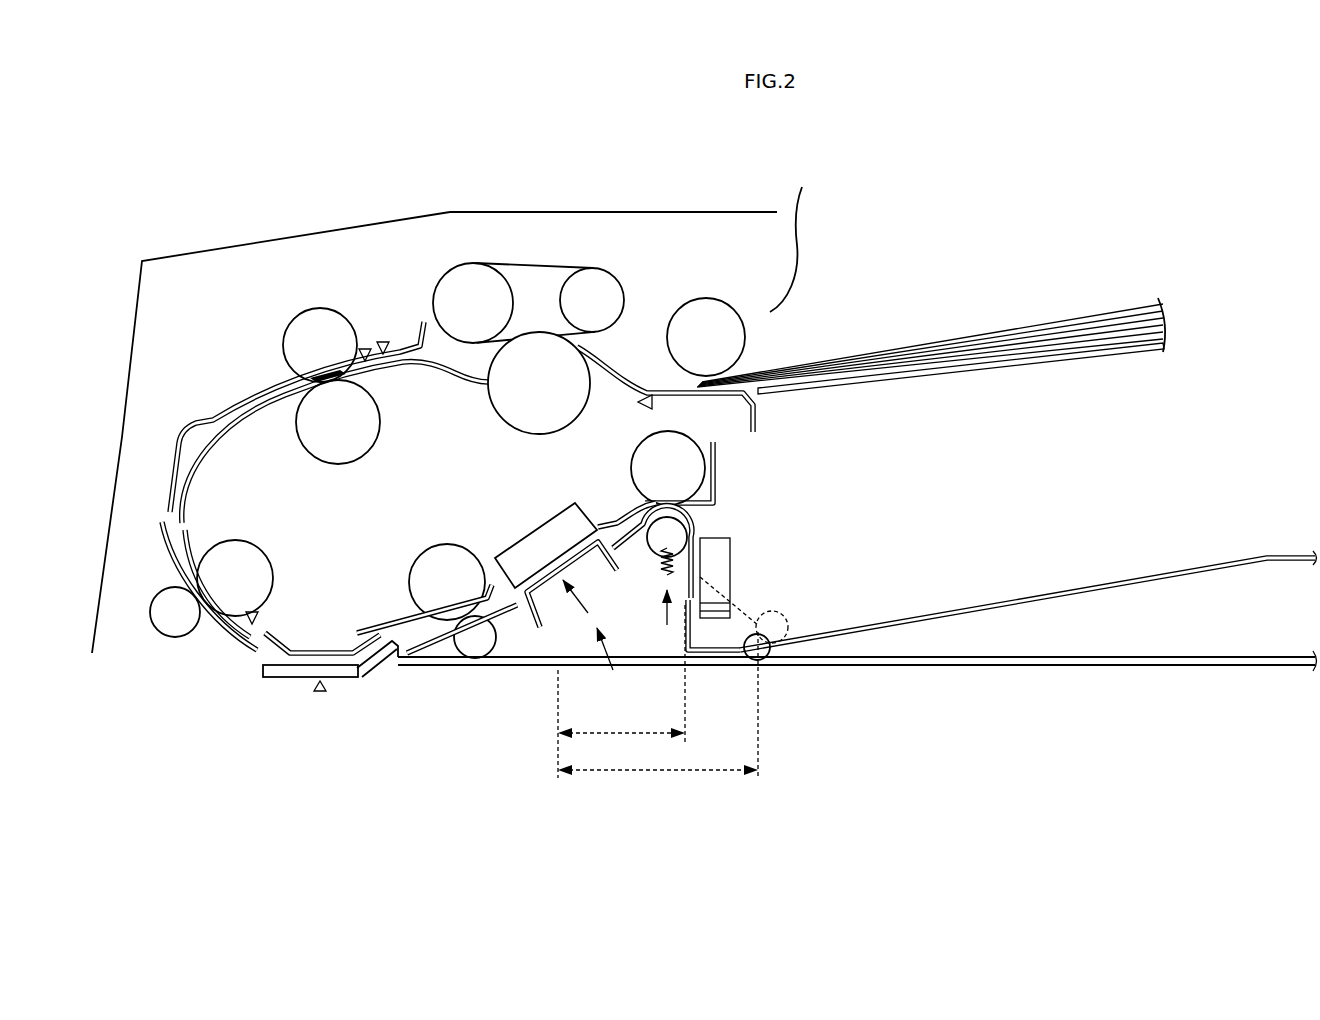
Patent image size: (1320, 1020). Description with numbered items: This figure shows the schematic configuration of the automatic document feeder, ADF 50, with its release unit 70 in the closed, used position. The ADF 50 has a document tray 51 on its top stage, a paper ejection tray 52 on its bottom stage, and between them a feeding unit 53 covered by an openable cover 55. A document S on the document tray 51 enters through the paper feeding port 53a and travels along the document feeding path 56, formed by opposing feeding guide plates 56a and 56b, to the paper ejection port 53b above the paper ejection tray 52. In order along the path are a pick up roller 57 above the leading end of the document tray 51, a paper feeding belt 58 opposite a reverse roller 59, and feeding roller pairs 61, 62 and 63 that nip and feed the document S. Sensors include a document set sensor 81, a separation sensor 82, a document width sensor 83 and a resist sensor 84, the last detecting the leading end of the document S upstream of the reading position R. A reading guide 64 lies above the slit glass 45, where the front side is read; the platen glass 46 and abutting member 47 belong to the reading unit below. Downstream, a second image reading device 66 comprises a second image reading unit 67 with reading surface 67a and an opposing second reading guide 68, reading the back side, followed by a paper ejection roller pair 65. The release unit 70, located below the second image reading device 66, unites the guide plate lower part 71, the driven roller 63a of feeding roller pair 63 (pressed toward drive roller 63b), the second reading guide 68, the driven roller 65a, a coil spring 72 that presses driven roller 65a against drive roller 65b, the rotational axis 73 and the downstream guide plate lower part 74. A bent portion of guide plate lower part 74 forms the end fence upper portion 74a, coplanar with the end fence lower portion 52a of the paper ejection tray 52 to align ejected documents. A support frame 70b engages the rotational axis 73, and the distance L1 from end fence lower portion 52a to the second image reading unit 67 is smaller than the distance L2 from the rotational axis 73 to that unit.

The ADF 50 is at (205, 218).
The cover 55 is at (353, 228).
The paper feeding port 53a is at (795, 236).
The feeding unit 53 is at (301, 486).
The document feeding path 56 is at (200, 452).
The feeding guide plate 56a is at (256, 393).
The feeding guide plate 56b is at (205, 470).
The reverse roller 59 is at (590, 405).
The document set sensor 81 is at (648, 390).
The paper ejection port 53b is at (707, 517).
The paper feeding belt 58 is at (540, 262).
The pick up roller 57 is at (711, 292).
The document tray 51 is at (1128, 347).
The document S is at (1000, 333).
The feeding roller pair 61 is at (388, 426).
The document width sensor 83 is at (365, 343).
The separation sensor 82 is at (388, 338).
The feeding roller pair 62 is at (268, 545).
The resist sensor 84 is at (262, 617).
The feeding roller pair 63 is at (420, 545).
The driven roller 63a is at (478, 648).
The drive roller 63b is at (415, 581).
The guide plate lower part 71 is at (430, 657).
The paper ejection roller pair 65 is at (630, 462).
The drive roller 65b is at (683, 466).
The driven roller 65a is at (620, 520).
The guide plate lower part 74 is at (632, 531).
The coil spring 72 is at (664, 576).
The second image reading device 66 is at (544, 541).
The second image reading unit 67 is at (510, 556).
The reading surface 67a is at (560, 545).
The second reading guide 68 is at (533, 630).
The release unit 70 is at (613, 670).
The end fence lower portion 52a is at (686, 614).
The end fence upper portion 74a is at (698, 652).
The paper ejection tray 52 is at (1137, 578).
The rotational axis 73 is at (762, 657).
The support frame 70b is at (786, 652).
The platen glass 46 is at (982, 667).
The slit glass 45 is at (283, 679).
The reading position R is at (320, 710).
The abutting member 47 is at (388, 663).
The reading guide 64 is at (268, 647).
The distance L1 is at (621, 691).
The distance L2 is at (658, 717).